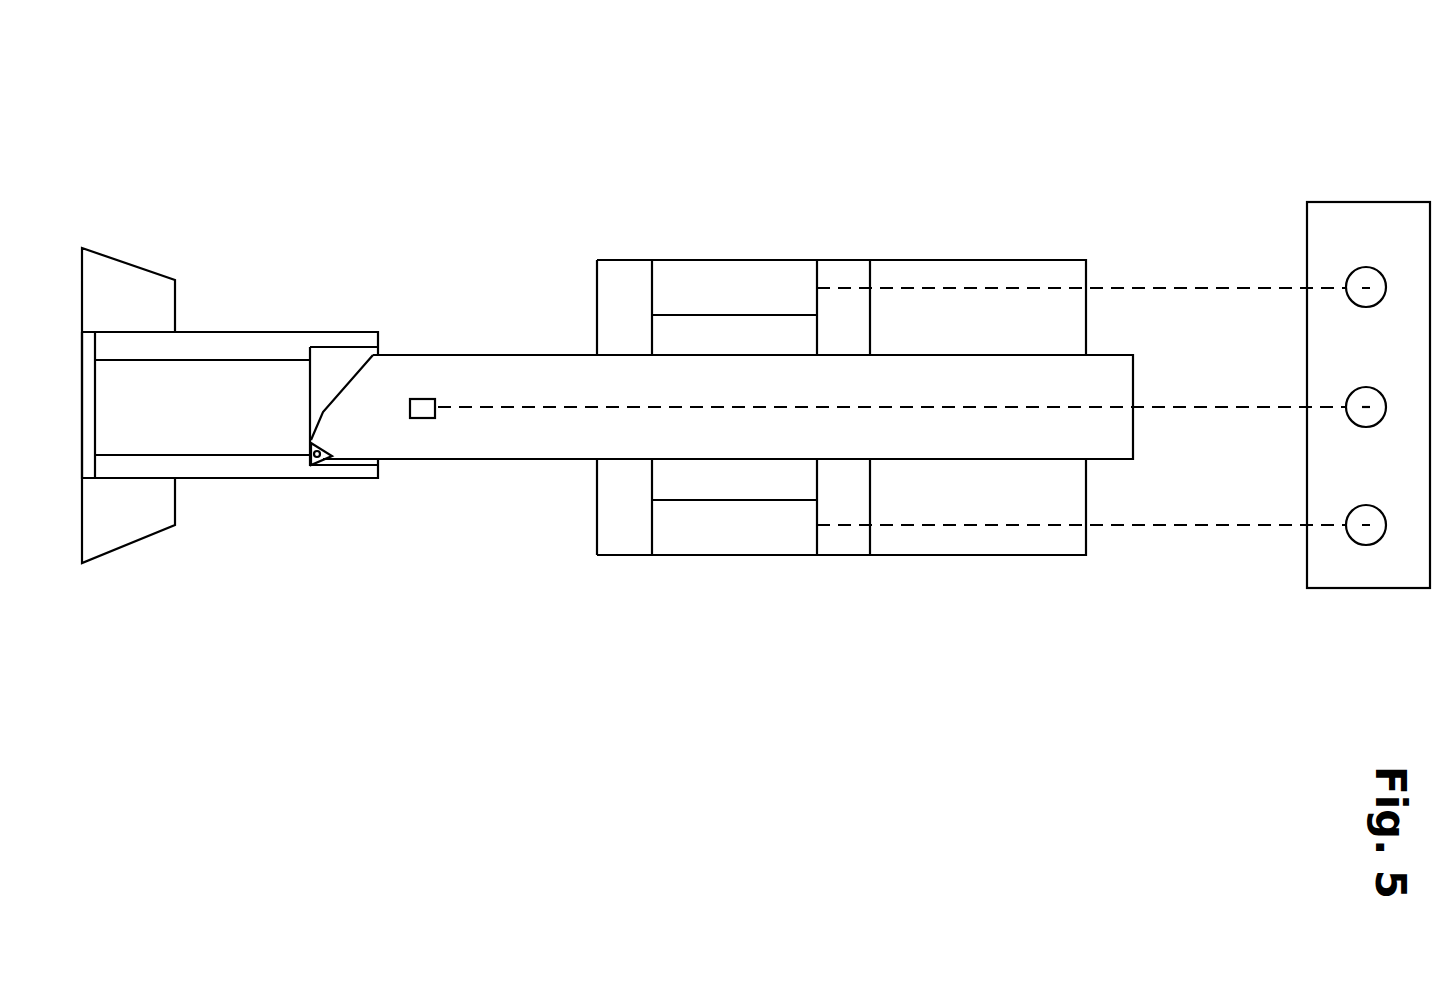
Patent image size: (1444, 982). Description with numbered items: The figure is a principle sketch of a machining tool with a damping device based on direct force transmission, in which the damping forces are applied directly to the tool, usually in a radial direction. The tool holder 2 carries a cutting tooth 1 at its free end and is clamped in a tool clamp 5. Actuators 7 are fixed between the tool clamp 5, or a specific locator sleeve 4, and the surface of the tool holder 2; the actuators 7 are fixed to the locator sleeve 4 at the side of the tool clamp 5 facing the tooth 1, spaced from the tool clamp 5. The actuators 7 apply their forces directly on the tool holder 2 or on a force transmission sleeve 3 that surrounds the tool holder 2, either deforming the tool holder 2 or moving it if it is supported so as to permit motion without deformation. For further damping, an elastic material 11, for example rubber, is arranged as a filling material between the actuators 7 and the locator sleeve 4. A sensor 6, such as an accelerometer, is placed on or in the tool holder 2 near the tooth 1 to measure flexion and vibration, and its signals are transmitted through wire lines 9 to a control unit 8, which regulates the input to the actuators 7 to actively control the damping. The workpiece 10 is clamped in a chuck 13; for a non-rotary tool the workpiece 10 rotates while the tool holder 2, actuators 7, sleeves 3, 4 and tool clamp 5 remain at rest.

The tooth 1 is at (320, 463).
The tool holder 2 is at (423, 373).
The force transmission sleeve 3 is at (625, 290).
The locator sleeve 4 is at (843, 312).
The tool clamp 5 is at (985, 310).
The sensor 6 is at (421, 411).
The actuators 7 is at (722, 287).
The control unit 8 is at (1334, 559).
The wire lines 9 is at (1183, 523).
The workpiece 10 is at (213, 345).
The elastic material 11 is at (755, 478).
The chuck 13 is at (118, 292).